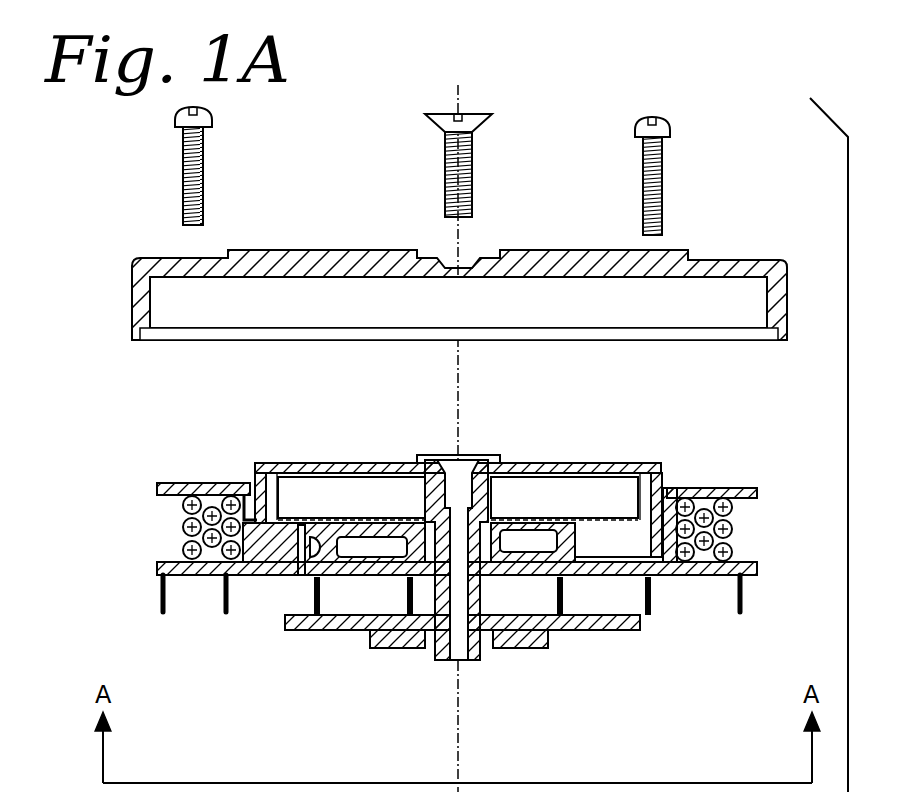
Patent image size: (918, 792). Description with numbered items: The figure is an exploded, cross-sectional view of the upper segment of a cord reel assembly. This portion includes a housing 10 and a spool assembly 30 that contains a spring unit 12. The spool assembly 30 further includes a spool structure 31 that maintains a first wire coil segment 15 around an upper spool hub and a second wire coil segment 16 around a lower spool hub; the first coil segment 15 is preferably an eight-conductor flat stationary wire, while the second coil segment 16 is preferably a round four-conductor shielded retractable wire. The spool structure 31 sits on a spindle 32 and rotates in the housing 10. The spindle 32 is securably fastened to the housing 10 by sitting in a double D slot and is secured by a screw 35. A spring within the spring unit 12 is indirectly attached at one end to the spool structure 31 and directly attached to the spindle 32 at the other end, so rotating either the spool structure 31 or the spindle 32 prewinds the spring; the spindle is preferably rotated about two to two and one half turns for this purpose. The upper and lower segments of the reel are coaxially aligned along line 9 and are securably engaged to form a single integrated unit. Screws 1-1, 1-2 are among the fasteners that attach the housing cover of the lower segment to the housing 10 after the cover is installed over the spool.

The screw 1-1 is at (203, 180).
The screw 1-2 is at (643, 197).
The screw 35 is at (443, 180).
The housing 10 is at (153, 258).
The line 9 is at (460, 422).
The spool assembly 30 is at (462, 546).
The spring unit 12 is at (563, 495).
The spool structure 31 is at (185, 484).
The second wire coil segment 16 is at (188, 532).
The first wire coil segment 15 is at (156, 597).
The spindle 32 is at (472, 662).